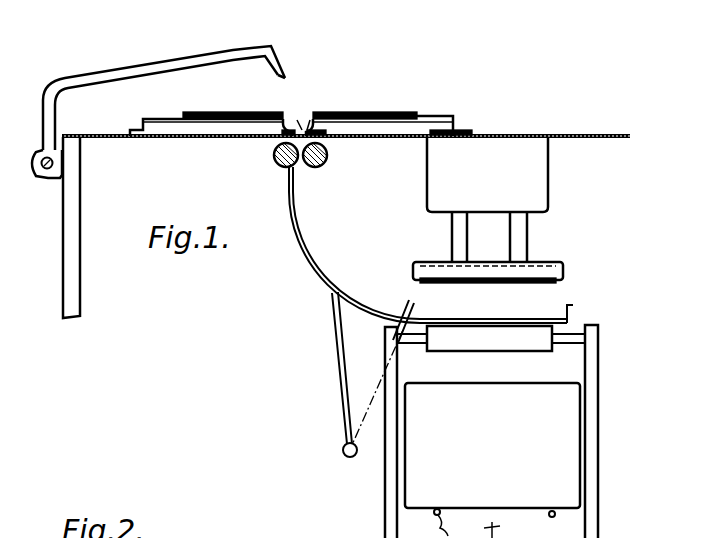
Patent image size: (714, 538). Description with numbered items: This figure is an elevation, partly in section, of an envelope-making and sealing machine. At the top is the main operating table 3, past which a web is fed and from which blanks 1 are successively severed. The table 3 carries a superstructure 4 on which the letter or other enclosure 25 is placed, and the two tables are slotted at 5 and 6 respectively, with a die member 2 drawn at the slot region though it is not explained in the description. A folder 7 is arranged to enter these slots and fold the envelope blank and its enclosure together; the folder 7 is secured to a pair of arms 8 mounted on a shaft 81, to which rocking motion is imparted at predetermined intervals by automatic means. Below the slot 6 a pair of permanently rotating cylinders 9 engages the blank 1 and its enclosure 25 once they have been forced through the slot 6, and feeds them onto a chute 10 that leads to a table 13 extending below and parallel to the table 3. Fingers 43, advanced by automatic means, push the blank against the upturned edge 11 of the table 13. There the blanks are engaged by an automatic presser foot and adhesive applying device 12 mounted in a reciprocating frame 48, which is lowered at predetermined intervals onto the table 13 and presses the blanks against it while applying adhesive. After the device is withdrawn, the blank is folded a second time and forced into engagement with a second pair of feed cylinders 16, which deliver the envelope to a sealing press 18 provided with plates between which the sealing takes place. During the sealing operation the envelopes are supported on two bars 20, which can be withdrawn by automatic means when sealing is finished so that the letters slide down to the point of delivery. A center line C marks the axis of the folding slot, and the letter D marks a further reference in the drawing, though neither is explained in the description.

The blank 1 is at (168, 139).
The die block 2 is at (316, 124).
The main operating table 3 is at (432, 134).
The superstructure 4 is at (432, 112).
The slot 5 is at (305, 120).
The slot 6 is at (327, 146).
The folder 7 is at (276, 76).
The arms 8 is at (174, 60).
The shaft 81 is at (44, 176).
The permanently rotating cylinders 9 is at (286, 167).
The chute 10 is at (300, 233).
The upturned edge 11 is at (572, 304).
The presser foot and adhesive applying device 12 is at (552, 284).
The table 13 is at (457, 320).
The second pair of feed cylinders 16 is at (536, 345).
The sealing press 18 is at (562, 430).
The bars 20 is at (548, 517).
The enclosure 25 is at (196, 112).
The fingers 43 is at (384, 380).
The reciprocating frame 48 is at (540, 265).
The center line C is at (298, 120).
The direction D is at (498, 530).